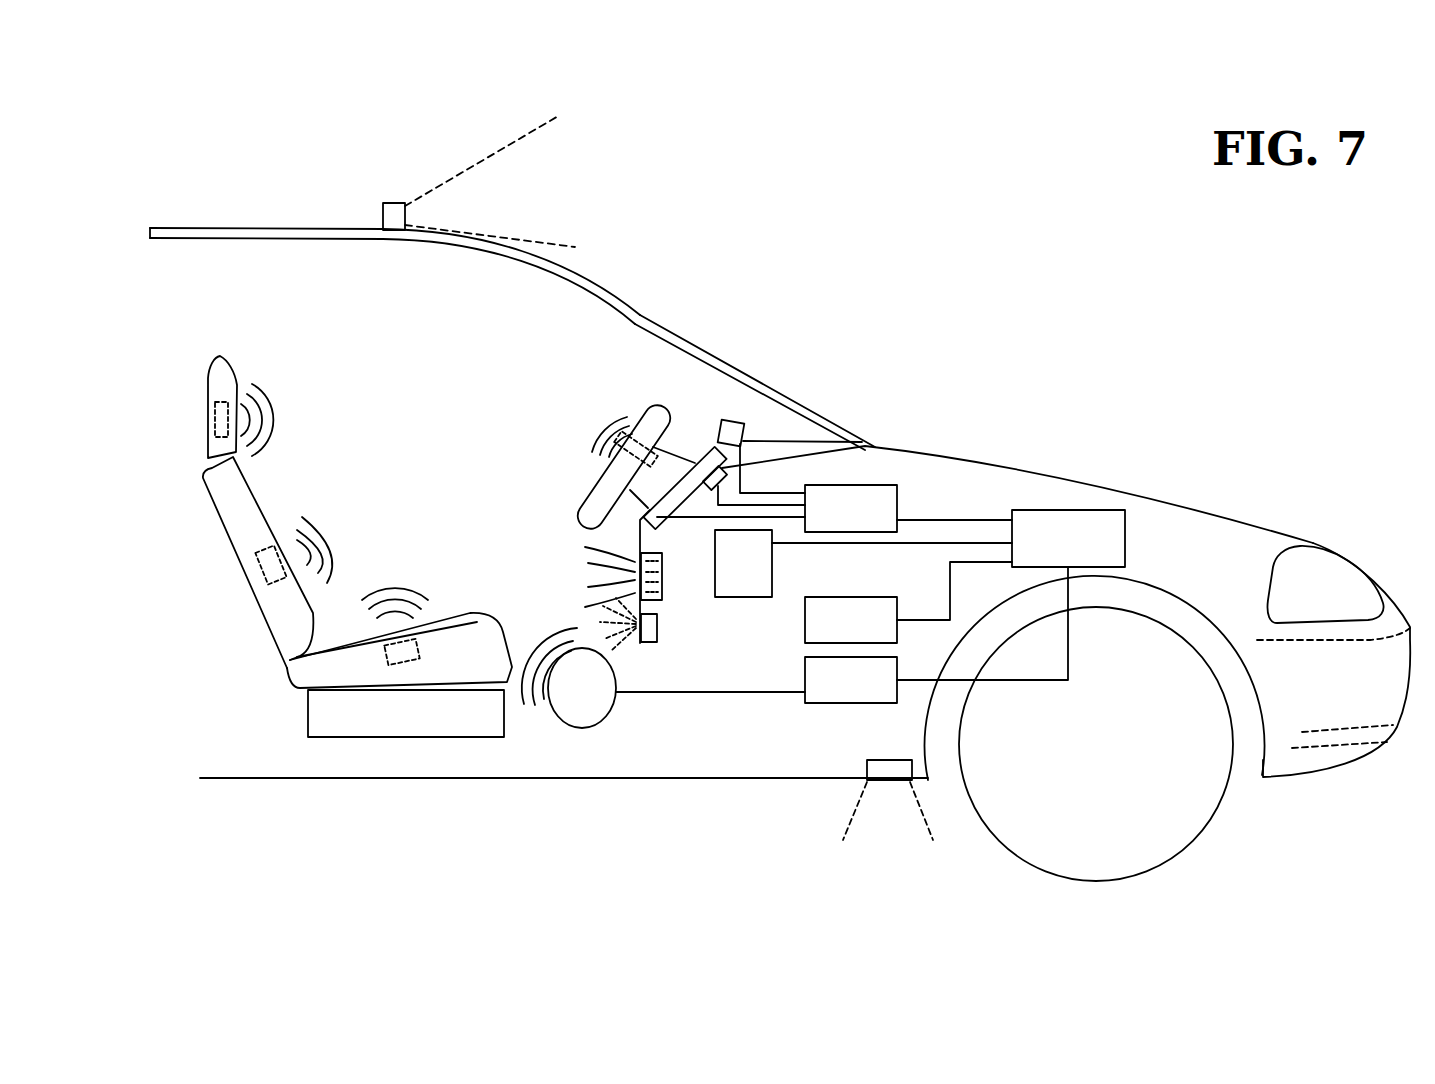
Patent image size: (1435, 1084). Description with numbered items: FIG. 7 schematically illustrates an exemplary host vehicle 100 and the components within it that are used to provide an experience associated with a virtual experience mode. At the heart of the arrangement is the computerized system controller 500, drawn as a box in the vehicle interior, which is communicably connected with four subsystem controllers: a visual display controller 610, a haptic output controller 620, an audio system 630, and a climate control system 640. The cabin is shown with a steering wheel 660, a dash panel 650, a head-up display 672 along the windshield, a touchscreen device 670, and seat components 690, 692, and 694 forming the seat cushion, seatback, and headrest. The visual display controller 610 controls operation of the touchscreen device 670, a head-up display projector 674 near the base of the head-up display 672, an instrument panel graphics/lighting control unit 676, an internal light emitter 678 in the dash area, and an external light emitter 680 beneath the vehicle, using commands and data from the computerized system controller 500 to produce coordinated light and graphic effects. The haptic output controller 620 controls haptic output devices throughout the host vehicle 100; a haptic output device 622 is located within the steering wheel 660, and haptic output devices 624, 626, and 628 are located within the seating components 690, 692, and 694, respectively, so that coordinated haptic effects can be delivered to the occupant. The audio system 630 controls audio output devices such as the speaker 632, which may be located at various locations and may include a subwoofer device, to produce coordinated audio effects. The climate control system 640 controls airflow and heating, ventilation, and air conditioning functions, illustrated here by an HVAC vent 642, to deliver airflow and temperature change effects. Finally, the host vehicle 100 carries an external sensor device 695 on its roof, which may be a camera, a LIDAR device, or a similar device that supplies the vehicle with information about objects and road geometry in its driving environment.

The host vehicle 100 is at (259, 228).
The external sensor device 695 is at (393, 203).
The seat component 694 is at (210, 382).
The haptic output device 628 is at (215, 420).
The haptic output device 626 is at (262, 565).
The seat component 692 is at (265, 641).
The haptic output device 624 is at (398, 660).
The seat component 690 is at (444, 678).
The haptic output device 622 is at (642, 413).
The steering wheel 660 is at (660, 405).
The dash panel 650 is at (638, 544).
The touchscreen device 670 is at (673, 497).
The head-up display projector 674 is at (735, 421).
The head-up display 672 is at (652, 316).
The instrument panel graphics/lighting control unit 676 is at (850, 447).
The visual display controller 610 is at (831, 522).
The haptic output controller 620 is at (831, 634).
The audio system 630 is at (831, 694).
The climate control system 640 is at (723, 577).
The computerized system controller 500 is at (1048, 552).
The HVAC vent 642 is at (663, 630).
The internal light emitter 678 is at (648, 643).
The speaker 632 is at (582, 728).
The external light emitter 680 is at (873, 772).